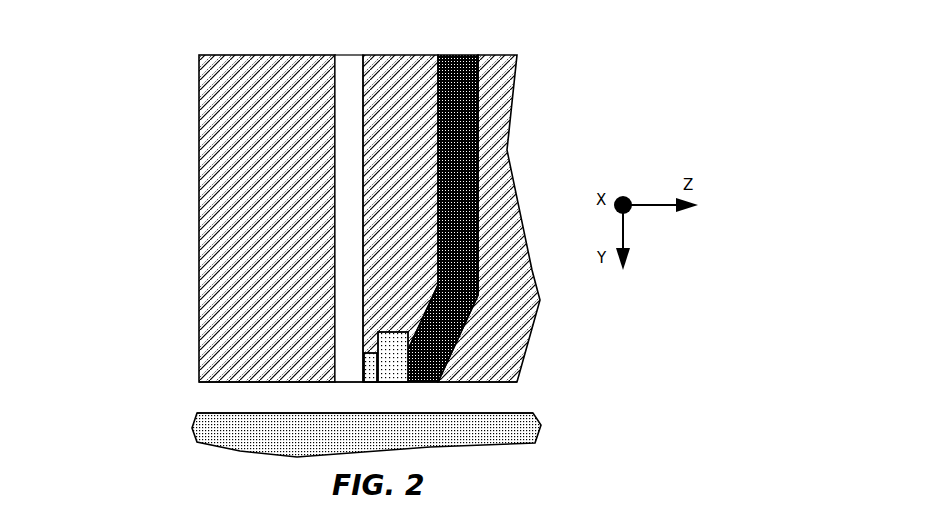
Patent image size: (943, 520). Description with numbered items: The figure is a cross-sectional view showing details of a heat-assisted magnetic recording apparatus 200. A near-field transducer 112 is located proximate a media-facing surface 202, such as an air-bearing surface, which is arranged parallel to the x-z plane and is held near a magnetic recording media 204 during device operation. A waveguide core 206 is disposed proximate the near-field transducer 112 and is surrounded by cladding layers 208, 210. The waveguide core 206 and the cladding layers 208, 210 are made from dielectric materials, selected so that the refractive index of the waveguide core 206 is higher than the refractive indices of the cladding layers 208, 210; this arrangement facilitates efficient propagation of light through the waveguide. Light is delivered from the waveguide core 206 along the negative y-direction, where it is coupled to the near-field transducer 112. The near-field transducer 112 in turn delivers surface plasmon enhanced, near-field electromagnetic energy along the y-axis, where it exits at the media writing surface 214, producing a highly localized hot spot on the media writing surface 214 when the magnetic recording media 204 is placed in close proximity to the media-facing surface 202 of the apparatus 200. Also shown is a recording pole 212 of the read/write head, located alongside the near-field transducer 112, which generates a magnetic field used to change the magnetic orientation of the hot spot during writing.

The HAMR apparatus 200 is at (120, 58).
The media-facing surface 202 is at (215, 382).
The magnetic recording media 204 is at (535, 413).
The waveguide core 206 is at (349, 218).
The cladding layer 208 is at (203, 91).
The cladding layer 210 is at (393, 55).
The recording pole 212 is at (457, 55).
The media writing surface 214 is at (495, 412).
The near-field transducer 112 is at (372, 382).